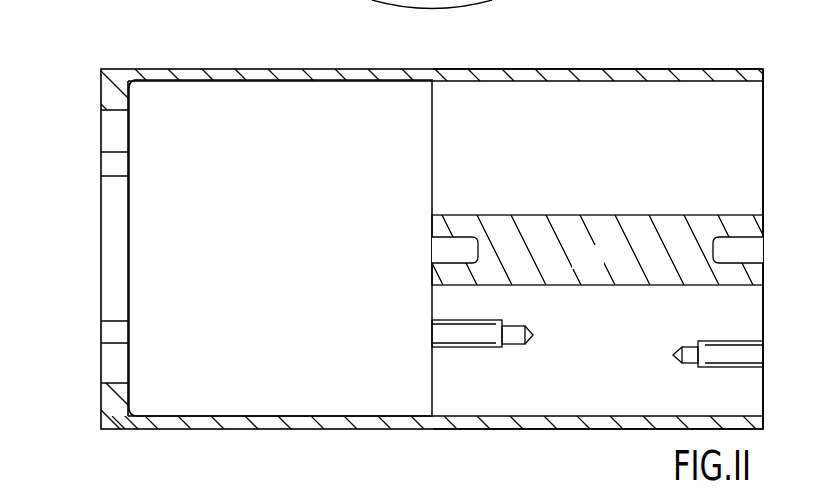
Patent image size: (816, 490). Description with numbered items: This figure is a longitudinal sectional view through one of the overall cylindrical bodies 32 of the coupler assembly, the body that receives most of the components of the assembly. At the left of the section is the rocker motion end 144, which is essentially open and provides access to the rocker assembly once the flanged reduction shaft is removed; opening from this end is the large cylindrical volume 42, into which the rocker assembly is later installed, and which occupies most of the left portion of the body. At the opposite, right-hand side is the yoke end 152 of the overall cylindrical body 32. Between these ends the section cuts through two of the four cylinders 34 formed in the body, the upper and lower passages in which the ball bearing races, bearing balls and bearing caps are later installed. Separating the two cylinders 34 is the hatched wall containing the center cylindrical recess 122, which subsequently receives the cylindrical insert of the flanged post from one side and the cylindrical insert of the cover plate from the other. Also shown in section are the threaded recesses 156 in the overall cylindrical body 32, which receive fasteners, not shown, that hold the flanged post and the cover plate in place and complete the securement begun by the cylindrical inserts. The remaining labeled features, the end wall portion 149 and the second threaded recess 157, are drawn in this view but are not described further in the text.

The overall cylindrical body 32 is at (589, 69).
The cylinders 34 is at (521, 69).
The large cylindrical volume 42 is at (253, 80).
The center cylindrical recess 122 is at (601, 266).
The rocker motion end 144 is at (178, 81).
The end wall 149 is at (126, 385).
The yoke end 152 is at (655, 69).
The threaded recesses 156 is at (495, 348).
The pin 157 is at (705, 341).